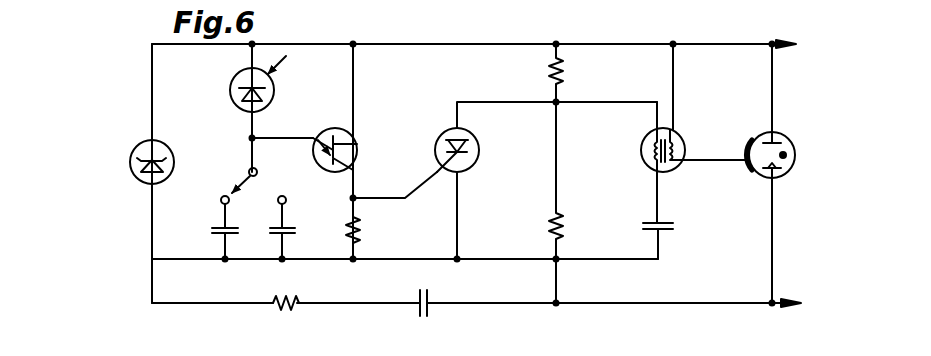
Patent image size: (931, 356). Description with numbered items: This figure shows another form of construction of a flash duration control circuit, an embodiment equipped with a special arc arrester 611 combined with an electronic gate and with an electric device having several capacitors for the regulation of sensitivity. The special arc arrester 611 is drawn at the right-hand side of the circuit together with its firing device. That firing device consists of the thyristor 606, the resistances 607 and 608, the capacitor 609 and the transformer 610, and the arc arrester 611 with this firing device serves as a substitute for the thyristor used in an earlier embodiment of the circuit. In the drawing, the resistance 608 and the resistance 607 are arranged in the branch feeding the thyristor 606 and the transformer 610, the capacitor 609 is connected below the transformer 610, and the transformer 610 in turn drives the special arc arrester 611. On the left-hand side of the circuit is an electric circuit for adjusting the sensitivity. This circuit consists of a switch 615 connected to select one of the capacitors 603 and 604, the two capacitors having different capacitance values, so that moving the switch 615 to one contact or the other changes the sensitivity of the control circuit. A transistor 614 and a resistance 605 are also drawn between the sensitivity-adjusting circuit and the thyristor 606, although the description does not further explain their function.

The capacitor 603 is at (222, 233).
The capacitor 604 is at (295, 234).
The resistor 605 is at (364, 231).
The thyristor 606 is at (438, 140).
The resistance 607 is at (548, 233).
The resistance 608 is at (549, 73).
The capacitor 609 is at (662, 230).
The transformer 610 is at (681, 134).
The special arc arrester 611 is at (786, 134).
The transistor 614 is at (327, 130).
The switch 615 is at (237, 182).